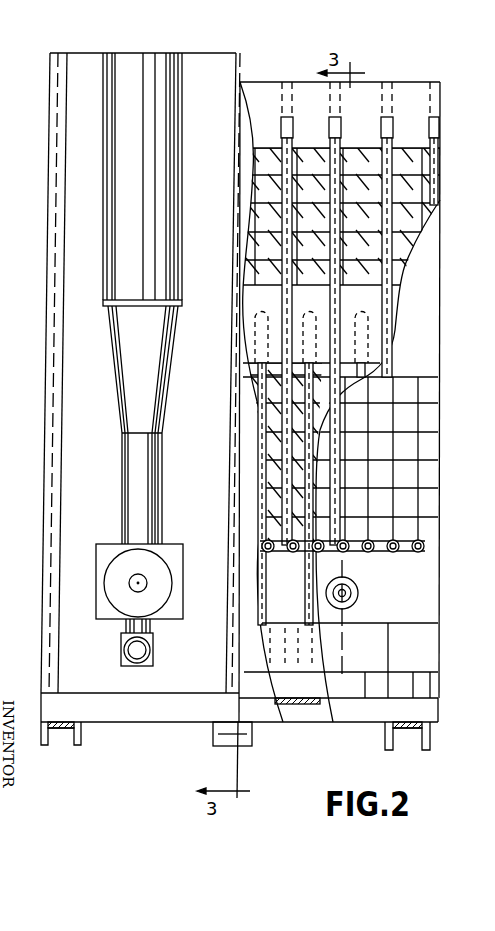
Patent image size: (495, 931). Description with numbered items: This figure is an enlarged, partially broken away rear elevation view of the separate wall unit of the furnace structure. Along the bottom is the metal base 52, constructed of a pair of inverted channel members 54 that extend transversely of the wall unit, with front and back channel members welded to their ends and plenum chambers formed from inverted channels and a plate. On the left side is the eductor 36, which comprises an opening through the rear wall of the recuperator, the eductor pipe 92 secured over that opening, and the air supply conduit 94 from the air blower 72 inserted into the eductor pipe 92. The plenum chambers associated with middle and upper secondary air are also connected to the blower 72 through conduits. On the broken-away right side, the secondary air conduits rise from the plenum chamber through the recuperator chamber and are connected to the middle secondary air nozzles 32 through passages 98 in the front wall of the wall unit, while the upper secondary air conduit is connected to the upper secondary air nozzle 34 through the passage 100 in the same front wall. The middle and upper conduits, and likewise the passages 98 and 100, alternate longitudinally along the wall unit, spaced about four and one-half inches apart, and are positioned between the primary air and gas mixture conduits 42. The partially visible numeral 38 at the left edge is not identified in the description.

The middle secondary air nozzles 32 is at (253, 324).
The upper secondary air nozzles 34 is at (391, 97).
The eductor 36 is at (115, 381).
The housing 38 is at (80, 457).
The primary air and gas conduits 42 is at (420, 550).
The metal base 52 is at (133, 722).
The inverted channel members 54 is at (430, 742).
The air blower 72 is at (252, 740).
The eductor pipe 92 is at (105, 200).
The air supply conduit 94 is at (154, 643).
The passages 98 is at (262, 410).
The passage 100 is at (437, 185).